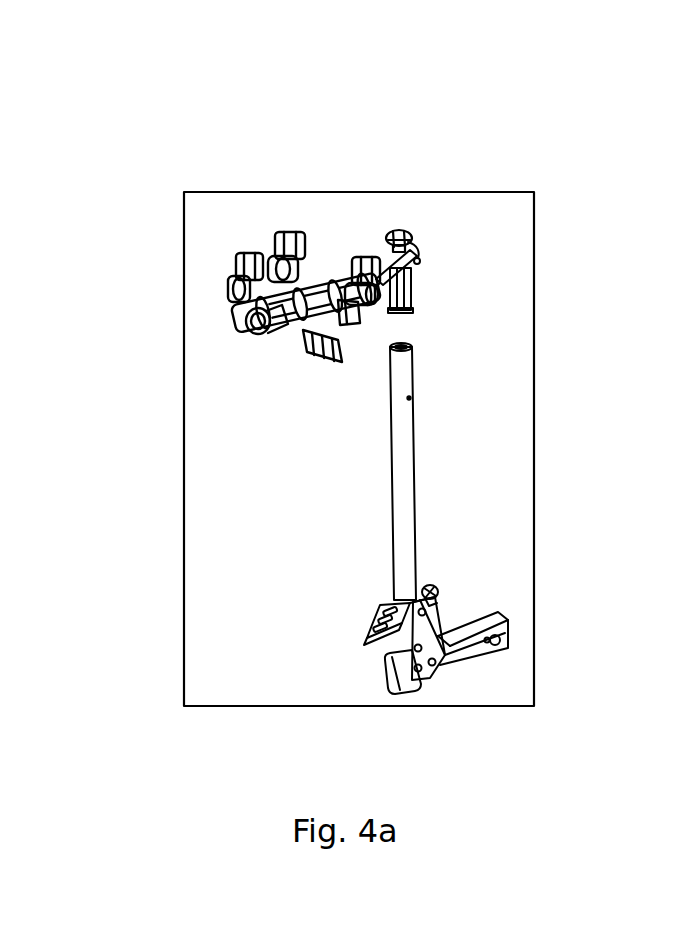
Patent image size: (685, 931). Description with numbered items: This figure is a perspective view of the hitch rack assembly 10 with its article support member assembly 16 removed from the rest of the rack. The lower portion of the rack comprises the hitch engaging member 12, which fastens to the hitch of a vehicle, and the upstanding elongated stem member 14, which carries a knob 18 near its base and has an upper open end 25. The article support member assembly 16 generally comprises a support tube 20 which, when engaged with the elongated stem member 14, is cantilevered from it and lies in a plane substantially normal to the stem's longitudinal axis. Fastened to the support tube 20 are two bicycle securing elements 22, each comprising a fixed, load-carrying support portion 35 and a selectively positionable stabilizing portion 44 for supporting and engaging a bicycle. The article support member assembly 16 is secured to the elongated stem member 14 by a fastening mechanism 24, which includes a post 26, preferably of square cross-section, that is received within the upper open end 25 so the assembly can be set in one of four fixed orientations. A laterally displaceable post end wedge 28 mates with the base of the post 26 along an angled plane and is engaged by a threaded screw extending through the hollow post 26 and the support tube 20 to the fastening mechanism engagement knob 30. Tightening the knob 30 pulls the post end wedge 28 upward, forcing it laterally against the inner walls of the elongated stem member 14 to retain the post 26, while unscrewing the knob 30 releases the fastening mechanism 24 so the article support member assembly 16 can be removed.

The hitch rack assembly 10 is at (247, 442).
The hitch engaging member 12 is at (473, 623).
The elongated stem member 14 is at (402, 460).
The article support member assembly 16 is at (337, 252).
The knob 18 is at (445, 602).
The support tube 20 is at (383, 258).
The bicycle securing element 22 is at (270, 243).
The fastening mechanism 24 is at (422, 233).
The upper open end 25 is at (407, 340).
The post 26 is at (413, 280).
The post end wedge 28 is at (412, 310).
The fastening mechanism engagement knob 30 is at (403, 233).
The fixed load-carrying support portion 35 is at (248, 302).
The selectively positionable stabilizing portion 44 is at (283, 336).